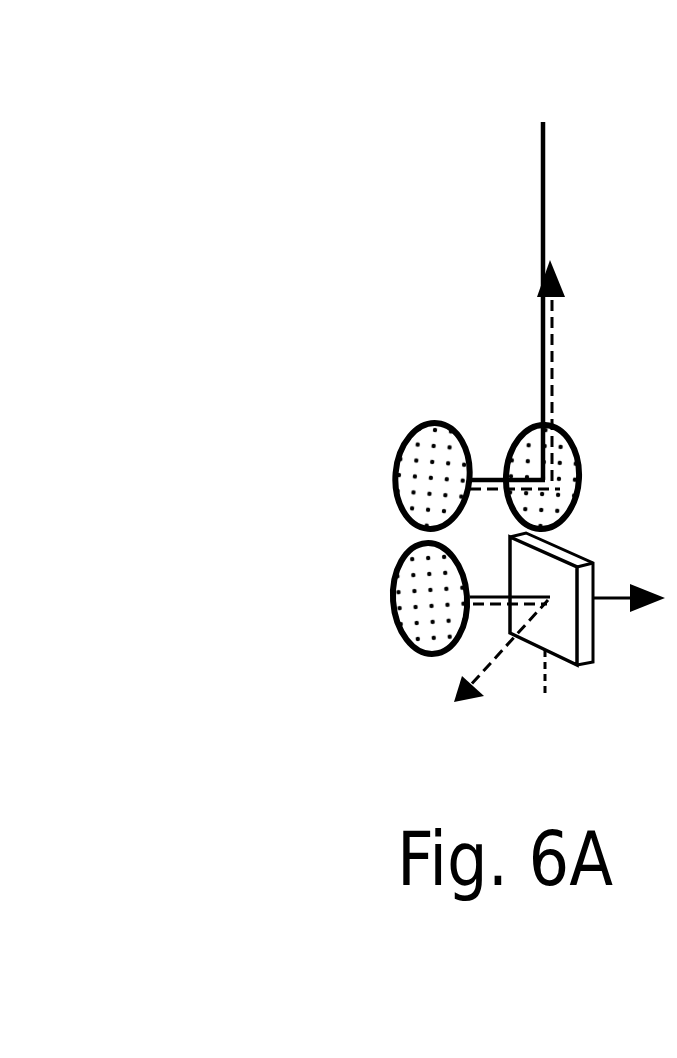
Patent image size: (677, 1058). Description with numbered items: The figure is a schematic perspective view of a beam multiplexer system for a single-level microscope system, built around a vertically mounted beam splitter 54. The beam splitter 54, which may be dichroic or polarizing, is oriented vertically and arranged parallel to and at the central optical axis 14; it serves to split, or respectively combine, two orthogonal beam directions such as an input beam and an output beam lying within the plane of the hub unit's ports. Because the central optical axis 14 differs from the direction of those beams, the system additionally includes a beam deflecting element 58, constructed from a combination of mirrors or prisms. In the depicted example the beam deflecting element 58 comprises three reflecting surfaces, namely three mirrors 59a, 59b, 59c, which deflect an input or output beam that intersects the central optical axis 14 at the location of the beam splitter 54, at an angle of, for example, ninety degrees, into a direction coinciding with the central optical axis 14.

The central optical axis 14 is at (541, 262).
The beam deflecting element 58 is at (237, 250).
The mirror 59a is at (520, 442).
The mirror 59b is at (410, 472).
The mirror 59c is at (402, 564).
The beam splitter 54 is at (587, 647).